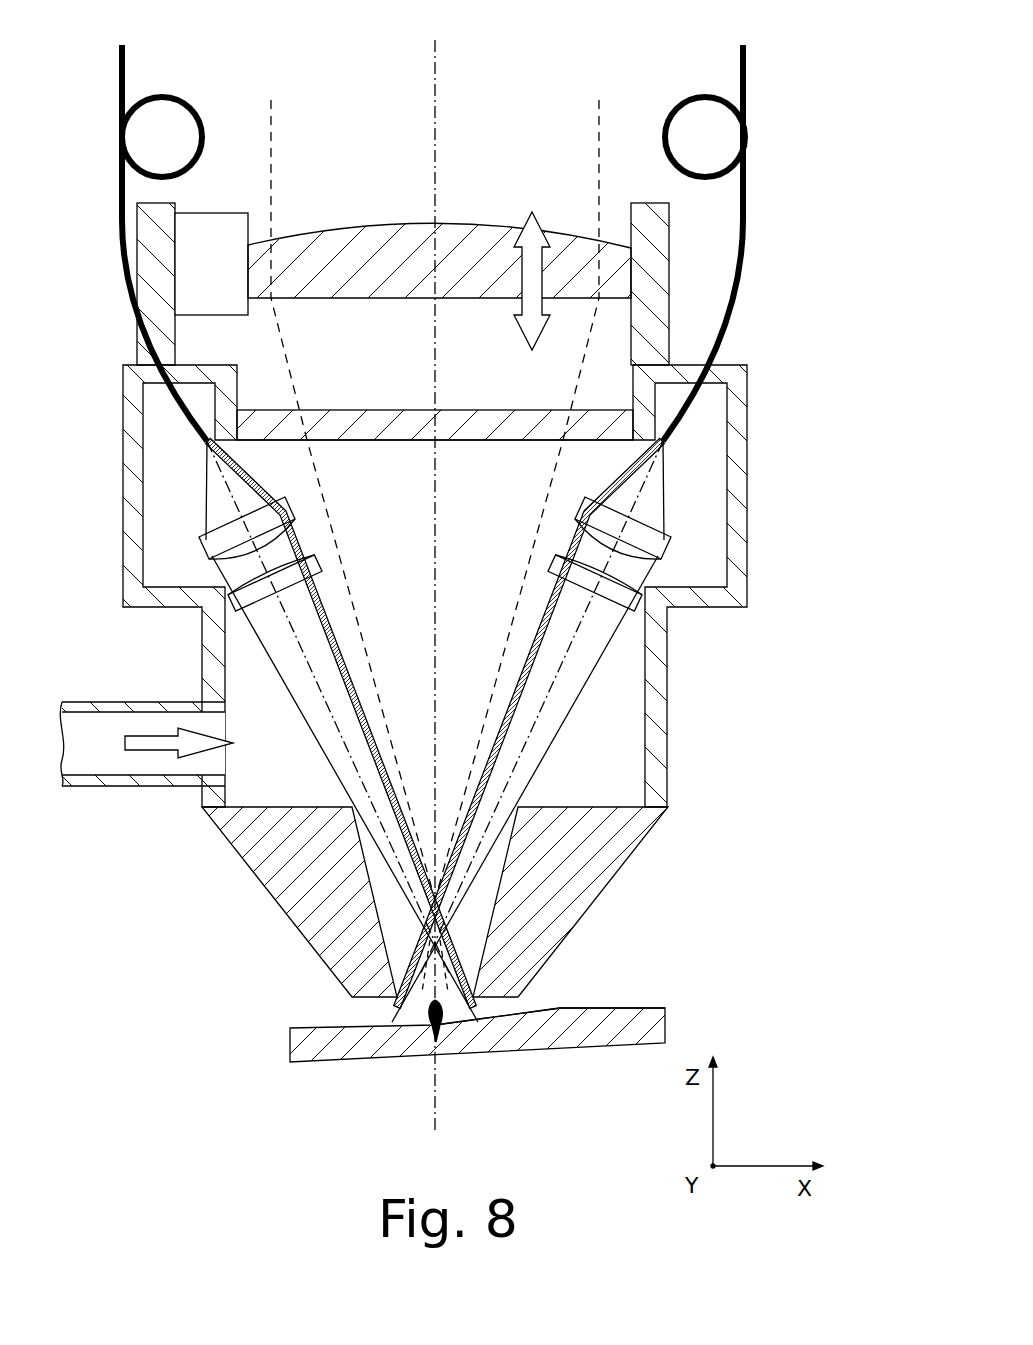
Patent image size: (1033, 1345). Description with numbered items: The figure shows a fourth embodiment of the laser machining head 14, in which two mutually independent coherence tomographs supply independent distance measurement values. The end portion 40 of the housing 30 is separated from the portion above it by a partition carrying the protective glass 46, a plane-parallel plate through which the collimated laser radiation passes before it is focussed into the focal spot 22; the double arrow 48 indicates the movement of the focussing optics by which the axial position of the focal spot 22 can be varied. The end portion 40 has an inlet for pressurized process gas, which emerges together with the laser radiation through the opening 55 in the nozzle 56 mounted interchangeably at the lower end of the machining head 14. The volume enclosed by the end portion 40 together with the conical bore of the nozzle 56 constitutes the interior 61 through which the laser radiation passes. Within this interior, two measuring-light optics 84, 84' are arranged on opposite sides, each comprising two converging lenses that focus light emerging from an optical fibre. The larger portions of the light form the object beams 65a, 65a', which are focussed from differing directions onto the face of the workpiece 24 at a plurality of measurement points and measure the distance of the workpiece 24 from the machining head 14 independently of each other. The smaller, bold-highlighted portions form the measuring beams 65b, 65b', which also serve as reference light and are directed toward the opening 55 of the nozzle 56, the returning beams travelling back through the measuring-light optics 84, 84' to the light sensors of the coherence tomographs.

The machining head 14 is at (178, 896).
The focal spot 22 is at (423, 1040).
The workpiece 24 is at (490, 1040).
The housing 30 is at (668, 753).
The end portion 40 is at (715, 510).
The protective glass 46 is at (495, 440).
The double arrow 48 is at (530, 307).
The opening 55 is at (466, 1012).
The nozzle 56 is at (587, 890).
The interior 61 is at (389, 546).
The object beam 65a is at (525, 789).
The object beam 65a' is at (345, 789).
The measuring beam 65b is at (529, 724).
The measuring beam 65b' is at (341, 724).
The measuring-light optics 84 is at (591, 708).
The measuring-light optics 84' is at (271, 708).